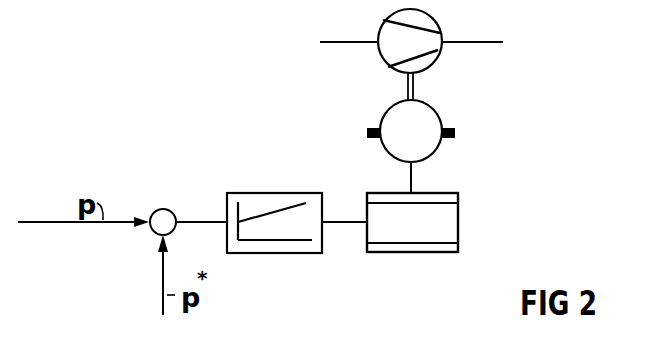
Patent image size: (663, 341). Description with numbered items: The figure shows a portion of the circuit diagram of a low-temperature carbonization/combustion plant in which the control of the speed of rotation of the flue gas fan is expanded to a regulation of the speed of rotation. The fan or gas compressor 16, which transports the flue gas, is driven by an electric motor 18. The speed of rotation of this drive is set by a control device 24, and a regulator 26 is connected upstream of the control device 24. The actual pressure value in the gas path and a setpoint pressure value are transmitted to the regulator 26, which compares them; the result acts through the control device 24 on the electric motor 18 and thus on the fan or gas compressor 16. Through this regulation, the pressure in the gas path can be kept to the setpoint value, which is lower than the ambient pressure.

The fan or gas compressor 16 is at (381, 57).
The electric motor 18 is at (433, 107).
The control device 24 is at (459, 222).
The regulator 26 is at (281, 192).